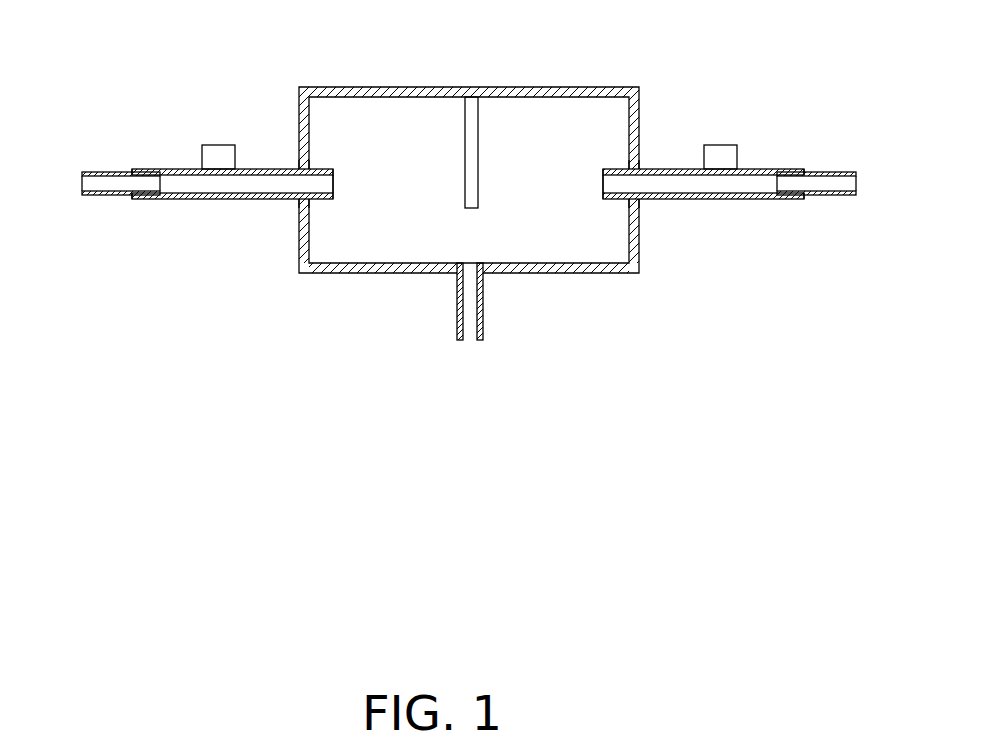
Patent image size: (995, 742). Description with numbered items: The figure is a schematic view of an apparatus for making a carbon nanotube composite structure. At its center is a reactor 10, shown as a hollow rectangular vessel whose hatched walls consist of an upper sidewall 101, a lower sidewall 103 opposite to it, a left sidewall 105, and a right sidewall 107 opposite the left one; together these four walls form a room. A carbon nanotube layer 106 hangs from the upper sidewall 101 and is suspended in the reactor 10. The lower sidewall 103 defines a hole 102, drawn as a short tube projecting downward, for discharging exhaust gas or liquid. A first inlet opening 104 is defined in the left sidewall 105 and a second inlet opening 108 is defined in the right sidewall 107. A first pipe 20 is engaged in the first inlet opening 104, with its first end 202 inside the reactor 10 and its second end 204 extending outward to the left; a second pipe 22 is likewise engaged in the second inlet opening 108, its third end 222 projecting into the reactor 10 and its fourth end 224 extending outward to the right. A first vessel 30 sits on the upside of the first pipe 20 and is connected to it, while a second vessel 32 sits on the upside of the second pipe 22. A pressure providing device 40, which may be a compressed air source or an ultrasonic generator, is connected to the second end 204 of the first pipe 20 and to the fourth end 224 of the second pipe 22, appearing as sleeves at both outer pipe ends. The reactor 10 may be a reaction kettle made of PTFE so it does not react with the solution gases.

The reactor 10 is at (550, 115).
The upper sidewall 101 is at (368, 88).
The hole 102 is at (470, 333).
The lower sidewall 103 is at (585, 262).
The first inlet opening 104 is at (300, 165).
The left sidewall 105 is at (299, 232).
The carbon nanotube layer 106 is at (463, 130).
The right sidewall 107 is at (640, 234).
The second inlet opening 108 is at (640, 167).
The first pipe 20 is at (175, 169).
The first end 202 is at (335, 184).
The second end 204 is at (133, 197).
The second pipe 22 is at (775, 199).
The third end 222 is at (603, 185).
The fourth end 224 is at (803, 170).
The first vessel 30 is at (220, 152).
The second vessel 32 is at (735, 152).
The pressure providing device 40 is at (98, 172).